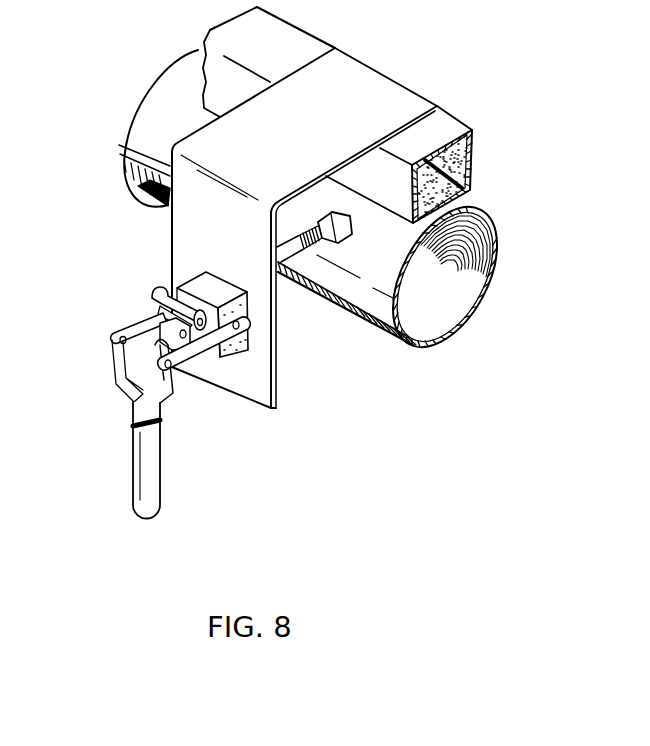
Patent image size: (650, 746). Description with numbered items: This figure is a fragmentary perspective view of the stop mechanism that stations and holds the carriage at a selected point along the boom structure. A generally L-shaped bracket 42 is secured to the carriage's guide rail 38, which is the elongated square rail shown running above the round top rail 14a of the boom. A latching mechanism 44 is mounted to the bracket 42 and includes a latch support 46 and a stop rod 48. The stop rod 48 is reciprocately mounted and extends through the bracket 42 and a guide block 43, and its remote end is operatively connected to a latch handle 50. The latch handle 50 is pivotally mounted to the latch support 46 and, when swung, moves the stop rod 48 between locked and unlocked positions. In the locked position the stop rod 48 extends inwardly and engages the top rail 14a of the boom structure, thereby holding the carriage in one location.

The top rail 14a is at (442, 298).
The guide rail 38 is at (294, 42).
The L-shaped bracket 42 is at (195, 217).
The guide block 43 is at (176, 277).
The latching mechanism 44 is at (198, 410).
The latch support 46 is at (196, 350).
The stop rod 48 is at (278, 277).
The latch handle 50 is at (139, 484).